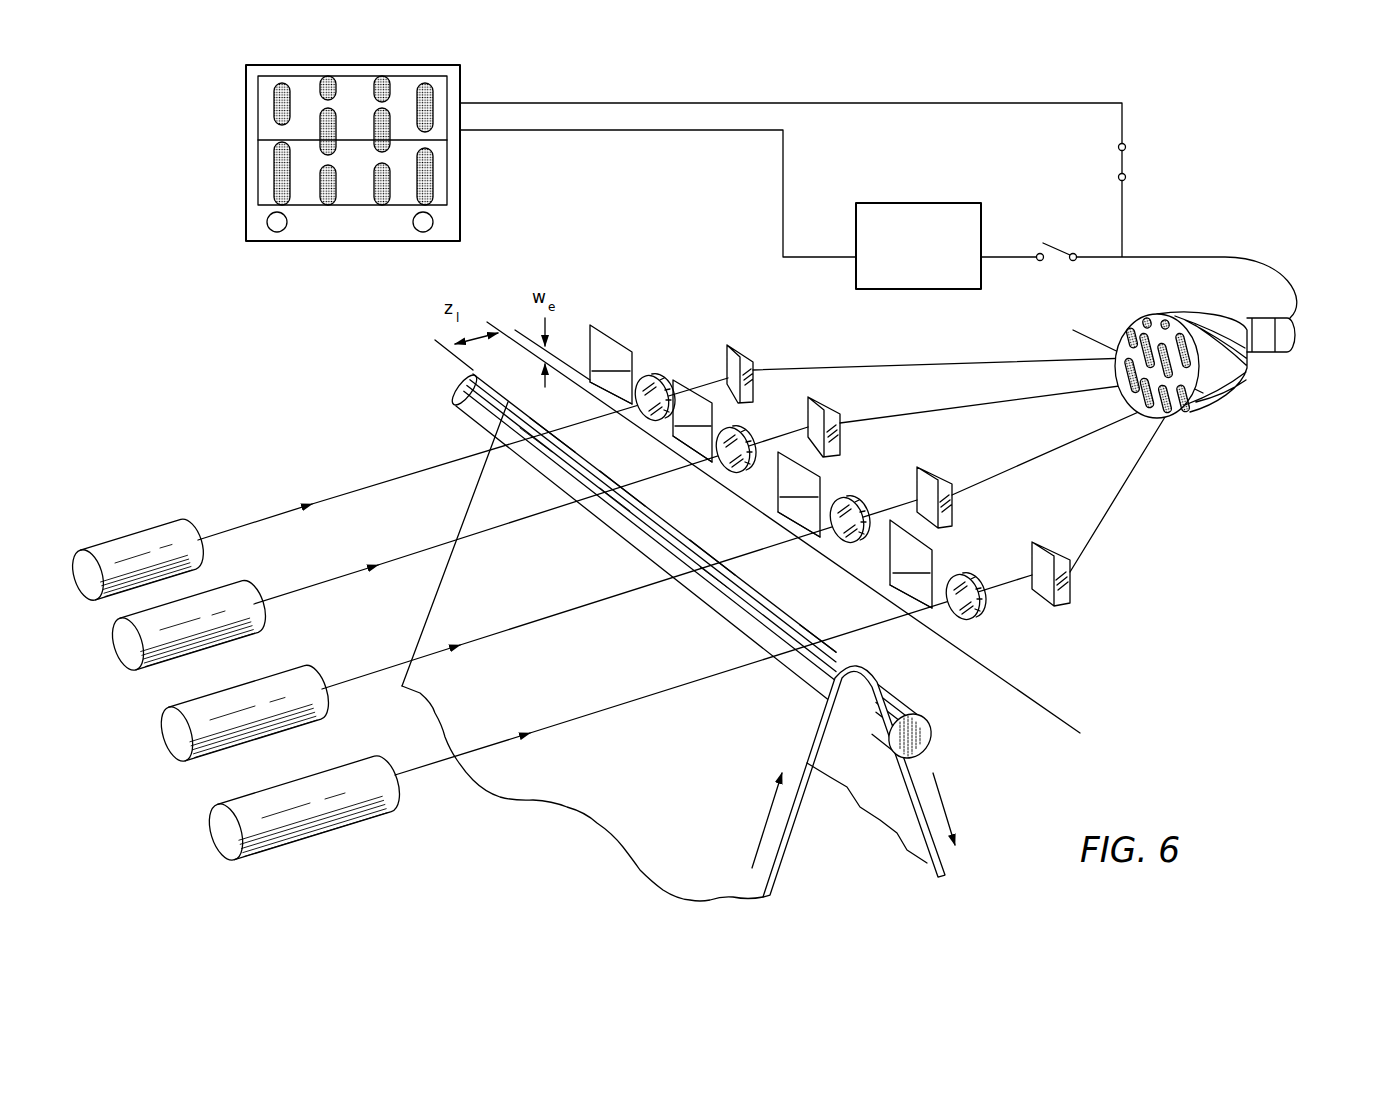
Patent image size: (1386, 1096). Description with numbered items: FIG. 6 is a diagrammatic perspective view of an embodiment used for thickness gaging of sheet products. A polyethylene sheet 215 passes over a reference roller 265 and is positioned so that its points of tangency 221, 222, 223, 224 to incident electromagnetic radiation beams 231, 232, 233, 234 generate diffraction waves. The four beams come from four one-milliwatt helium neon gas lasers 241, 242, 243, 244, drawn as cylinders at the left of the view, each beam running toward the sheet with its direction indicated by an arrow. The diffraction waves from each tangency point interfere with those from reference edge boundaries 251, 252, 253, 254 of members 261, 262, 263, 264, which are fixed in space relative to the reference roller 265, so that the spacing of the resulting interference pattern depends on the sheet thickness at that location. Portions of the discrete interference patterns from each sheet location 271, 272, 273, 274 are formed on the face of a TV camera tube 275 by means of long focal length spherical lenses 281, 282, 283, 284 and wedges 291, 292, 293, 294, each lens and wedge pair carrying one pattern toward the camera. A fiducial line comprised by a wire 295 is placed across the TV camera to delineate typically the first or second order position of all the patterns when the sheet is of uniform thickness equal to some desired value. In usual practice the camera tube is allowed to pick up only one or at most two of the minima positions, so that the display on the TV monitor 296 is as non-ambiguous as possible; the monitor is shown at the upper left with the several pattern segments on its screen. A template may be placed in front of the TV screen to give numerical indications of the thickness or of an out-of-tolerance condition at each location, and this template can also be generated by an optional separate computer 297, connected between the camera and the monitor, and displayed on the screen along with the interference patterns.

The polyethylene sheet 215 is at (913, 770).
The point of tangency 221 is at (820, 640).
The point of tangency 222 is at (712, 580).
The point of tangency 223 is at (614, 484).
The point of tangency 224 is at (551, 427).
The incident electromagnetic radiation beam 231 is at (437, 778).
The incident electromagnetic radiation beam 232 is at (367, 676).
The incident electromagnetic radiation beam 233 is at (300, 585).
The incident electromagnetic radiation beam 234 is at (267, 518).
The helium neon gas laser 241 is at (278, 829).
The helium neon gas laser 242 is at (220, 733).
The helium neon gas laser 243 is at (160, 649).
The helium neon gas laser 244 is at (132, 542).
The reference edge boundary 251 is at (900, 601).
The reference edge boundary 252 is at (800, 520).
The reference edge boundary 253 is at (690, 448).
The reference edge boundary 254 is at (612, 397).
The member 261 is at (911, 564).
The member 262 is at (799, 494).
The member 263 is at (692, 421).
The member 264 is at (611, 364).
The reference roller 265 is at (920, 737).
The sheet location 271 is at (1192, 335).
The sheet location 272 is at (1160, 313).
The sheet location 273 is at (1140, 313).
The sheet location 274 is at (1138, 328).
The TV camera tube 275 is at (1272, 348).
The long focal length spherical lens 281 is at (987, 551).
The long focal length spherical lens 282 is at (855, 498).
The long focal length spherical lens 283 is at (742, 430).
The long focal length spherical lens 284 is at (658, 376).
The wedge 291 is at (1071, 562).
The wedge 292 is at (953, 492).
The wedge 293 is at (842, 432).
The wedge 294 is at (754, 360).
The wire 295 is at (1211, 359).
The TV monitor 296 is at (460, 226).
The computer 297 is at (930, 203).